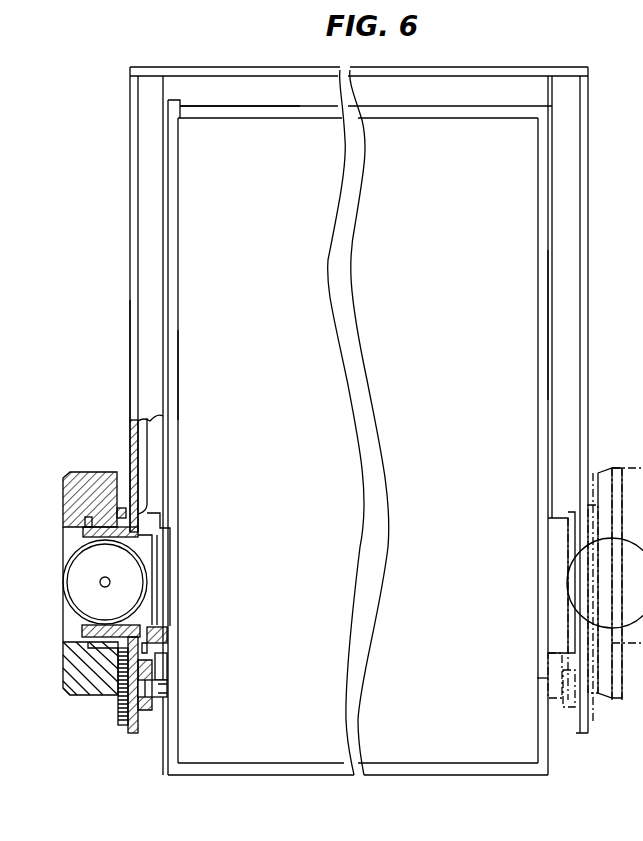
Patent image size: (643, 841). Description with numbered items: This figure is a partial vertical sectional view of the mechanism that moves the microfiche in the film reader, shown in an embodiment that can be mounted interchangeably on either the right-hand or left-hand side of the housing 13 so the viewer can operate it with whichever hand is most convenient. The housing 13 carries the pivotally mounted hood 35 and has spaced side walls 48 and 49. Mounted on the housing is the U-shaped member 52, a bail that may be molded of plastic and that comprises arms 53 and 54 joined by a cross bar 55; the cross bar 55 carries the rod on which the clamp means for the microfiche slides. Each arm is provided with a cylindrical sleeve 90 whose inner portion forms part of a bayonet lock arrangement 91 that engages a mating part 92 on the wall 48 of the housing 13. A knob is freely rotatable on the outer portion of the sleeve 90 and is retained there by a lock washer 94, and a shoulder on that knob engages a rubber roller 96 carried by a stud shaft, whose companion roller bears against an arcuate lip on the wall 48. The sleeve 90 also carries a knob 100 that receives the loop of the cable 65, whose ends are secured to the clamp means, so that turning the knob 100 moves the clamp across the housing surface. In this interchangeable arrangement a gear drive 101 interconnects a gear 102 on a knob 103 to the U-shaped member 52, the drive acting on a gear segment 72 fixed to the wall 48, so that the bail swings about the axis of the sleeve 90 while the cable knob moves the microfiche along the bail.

The housing 13 is at (237, 116).
The hood 35 is at (412, 258).
The side wall 48 is at (178, 385).
The side wall 49 is at (543, 311).
The U-shaped member 52 is at (128, 243).
The arm 53 is at (147, 298).
The arm 54 is at (570, 203).
The cross bar 55 is at (436, 80).
The cable 65 is at (148, 452).
The gear segment 72 is at (162, 672).
The cylindrical sleeve 90 is at (83, 532).
The bayonet lock arrangement 91 is at (160, 528).
The mating part 92 is at (165, 633).
The lock washer 94 is at (88, 639).
The rubber roller 96 is at (7, 717).
The knob 100 is at (80, 581).
The gear drive 101 is at (113, 711).
The gear 102 is at (124, 507).
The knob 103 is at (70, 476).